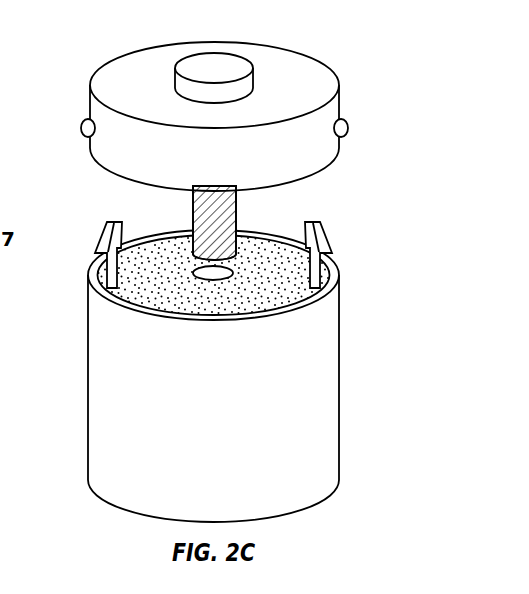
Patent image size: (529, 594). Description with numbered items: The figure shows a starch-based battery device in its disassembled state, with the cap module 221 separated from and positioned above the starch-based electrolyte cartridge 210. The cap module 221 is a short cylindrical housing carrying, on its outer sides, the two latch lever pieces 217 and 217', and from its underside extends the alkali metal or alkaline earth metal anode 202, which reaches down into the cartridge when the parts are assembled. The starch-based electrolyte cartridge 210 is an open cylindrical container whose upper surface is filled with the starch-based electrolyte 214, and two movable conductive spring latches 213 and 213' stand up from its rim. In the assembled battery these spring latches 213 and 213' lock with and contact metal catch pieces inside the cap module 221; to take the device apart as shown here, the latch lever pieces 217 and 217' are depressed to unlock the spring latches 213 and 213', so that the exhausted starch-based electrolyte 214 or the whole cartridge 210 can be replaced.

The starch-based electrolyte cartridge 210 is at (104, 384).
The starch-based electrolyte 214 is at (222, 273).
The conductive spring latch 213 is at (346, 248).
The conductive spring latch 213' is at (81, 248).
The alkali metal or alkaline earth metal anode 202 is at (227, 222).
The cap module 221 is at (283, 66).
The latch lever piece 217 is at (371, 118).
The latch lever piece 217' is at (56, 119).